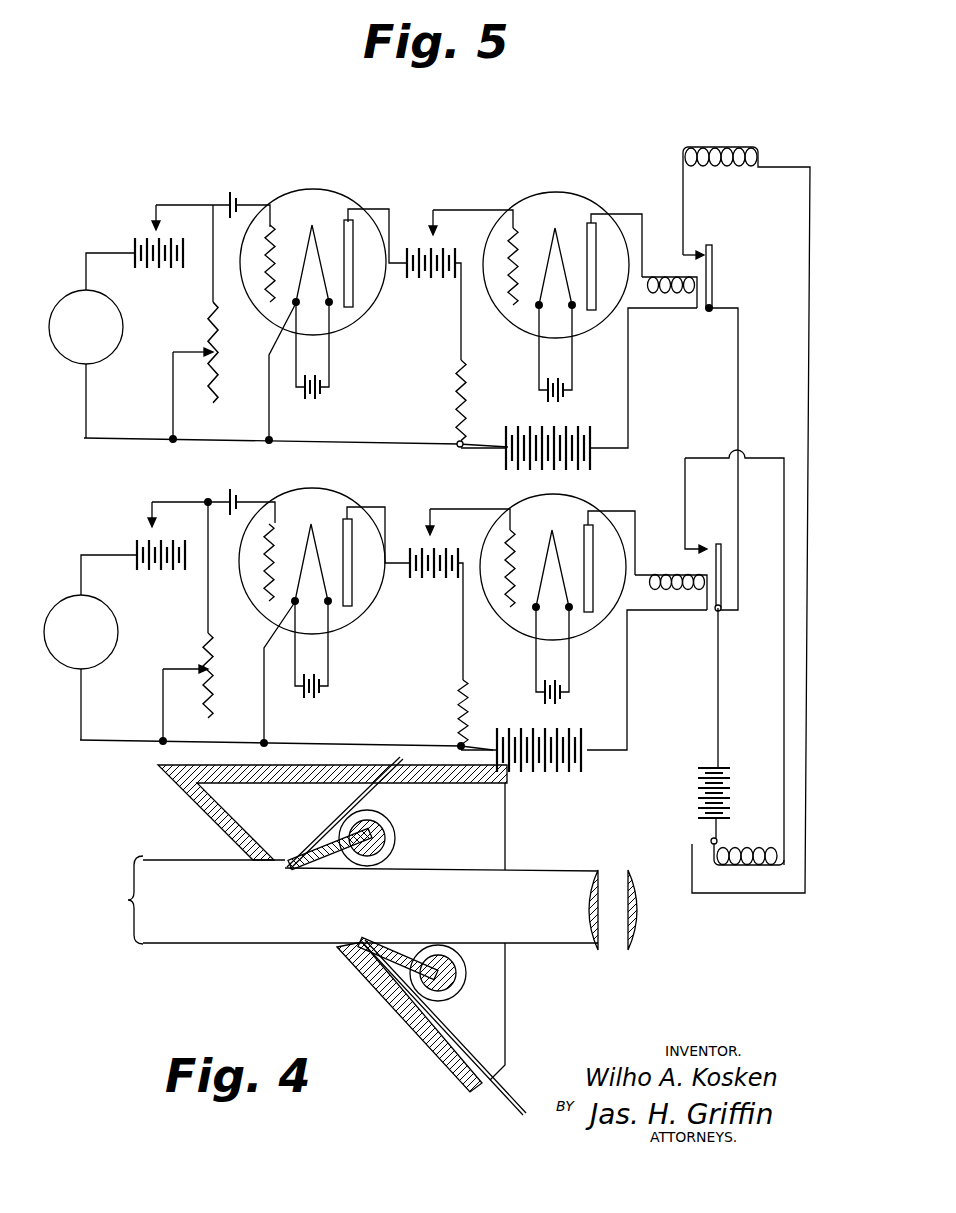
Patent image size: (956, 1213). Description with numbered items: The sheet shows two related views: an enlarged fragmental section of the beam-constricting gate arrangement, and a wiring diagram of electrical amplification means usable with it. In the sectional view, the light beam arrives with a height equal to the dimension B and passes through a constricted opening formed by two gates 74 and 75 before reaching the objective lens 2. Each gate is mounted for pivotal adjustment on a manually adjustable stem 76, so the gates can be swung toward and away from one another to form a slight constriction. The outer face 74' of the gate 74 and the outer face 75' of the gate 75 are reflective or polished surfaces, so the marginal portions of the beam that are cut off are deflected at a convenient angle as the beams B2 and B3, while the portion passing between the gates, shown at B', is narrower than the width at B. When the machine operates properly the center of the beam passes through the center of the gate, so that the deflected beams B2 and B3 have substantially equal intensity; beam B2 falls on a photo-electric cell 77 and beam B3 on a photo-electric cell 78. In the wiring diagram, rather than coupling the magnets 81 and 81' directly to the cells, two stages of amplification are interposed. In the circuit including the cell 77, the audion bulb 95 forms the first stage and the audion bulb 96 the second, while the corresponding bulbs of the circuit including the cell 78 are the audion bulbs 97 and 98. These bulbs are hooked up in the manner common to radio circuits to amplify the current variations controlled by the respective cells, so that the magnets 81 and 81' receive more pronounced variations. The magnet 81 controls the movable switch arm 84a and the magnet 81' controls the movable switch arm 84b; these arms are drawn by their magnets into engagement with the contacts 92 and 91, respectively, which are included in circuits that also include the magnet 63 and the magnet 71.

In FIG. 4, the objective lens 2 is at (613, 910).
In FIG. 5, the magnet 63 is at (728, 147).
In FIG. 5, the magnet 71 is at (738, 850).
In FIG. 4, the gate 74 is at (324, 841).
In FIG. 4, the outer face of gate 74' is at (286, 841).
In FIG. 4, the gate 75 is at (398, 938).
In FIG. 4, the outer face of gate 75' is at (342, 992).
In FIG. 4, the manually adjustable stem 76 is at (379, 835).
In FIG. 5, the photo-electric cell 77 is at (86, 327).
In FIG. 5, the photo-electric cell 78 is at (81, 632).
In FIG. 5, the magnet 81 is at (669, 277).
In FIG. 5, the magnet 81' is at (671, 572).
In FIG. 5, the movable switch arm 84a is at (713, 263).
In FIG. 5, the movable switch arm 84b is at (722, 566).
In FIG. 5, the contact 91 is at (707, 548).
In FIG. 5, the contact 92 is at (704, 254).
In FIG. 5, the audion bulb 95 is at (346, 165).
In FIG. 5, the audion bulb 96 is at (563, 192).
In FIG. 5, the audion bulb 97 is at (346, 477).
In FIG. 5, the audion bulb 98 is at (621, 492).
In FIG. 4, the beam height dimension B is at (324, 900).
In FIG. 4, the constricted beam portion B' is at (475, 906).
In FIG. 4, the deflected beam B2 is at (353, 802).
In FIG. 4, the deflected beam B3 is at (444, 1027).